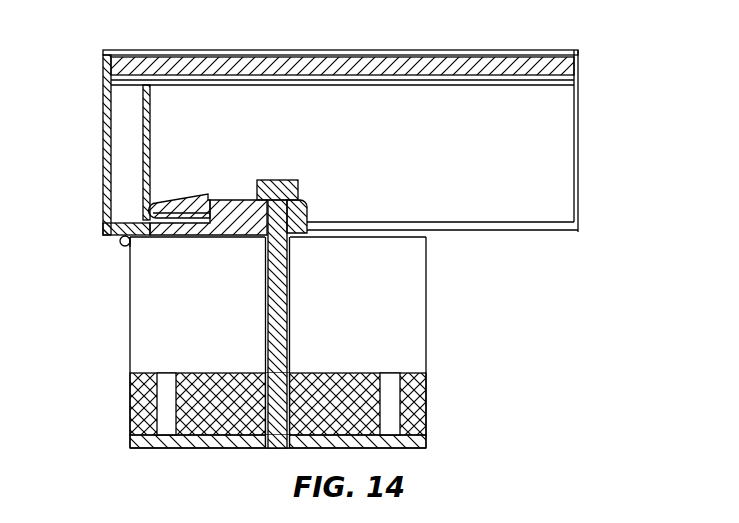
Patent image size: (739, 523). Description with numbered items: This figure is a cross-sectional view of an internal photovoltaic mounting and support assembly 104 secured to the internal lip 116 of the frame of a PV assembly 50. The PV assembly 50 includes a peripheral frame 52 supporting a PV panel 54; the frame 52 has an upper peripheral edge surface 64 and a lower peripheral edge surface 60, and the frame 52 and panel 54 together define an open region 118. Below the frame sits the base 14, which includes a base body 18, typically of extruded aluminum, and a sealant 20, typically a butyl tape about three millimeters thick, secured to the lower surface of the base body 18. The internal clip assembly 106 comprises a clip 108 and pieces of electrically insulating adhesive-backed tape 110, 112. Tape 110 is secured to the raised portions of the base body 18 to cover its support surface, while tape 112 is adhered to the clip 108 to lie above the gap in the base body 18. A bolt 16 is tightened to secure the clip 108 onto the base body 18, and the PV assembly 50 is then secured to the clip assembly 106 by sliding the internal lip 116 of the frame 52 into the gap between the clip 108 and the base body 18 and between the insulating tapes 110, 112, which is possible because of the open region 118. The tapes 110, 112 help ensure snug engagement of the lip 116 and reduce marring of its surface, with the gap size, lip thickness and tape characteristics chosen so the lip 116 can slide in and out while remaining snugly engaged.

The base 14 is at (457, 340).
The bolt 16 is at (283, 308).
The base body 18 is at (426, 392).
The sealant 20 is at (415, 442).
The PV assembly 50 is at (510, 50).
The peripheral frame 52 is at (103, 95).
The PV panel 54 is at (555, 72).
The lower peripheral edge surface 60 is at (119, 238).
The upper peripheral edge surface 64 is at (130, 50).
The internal photovoltaic mounting and support assembly 104 is at (612, 310).
The internal clip assembly 106 is at (432, 165).
The clip 108 is at (305, 205).
The insulating tape 110 is at (122, 247).
The insulating tape 112 is at (175, 200).
The internal lip 116 is at (240, 235).
The open region 118 is at (366, 134).